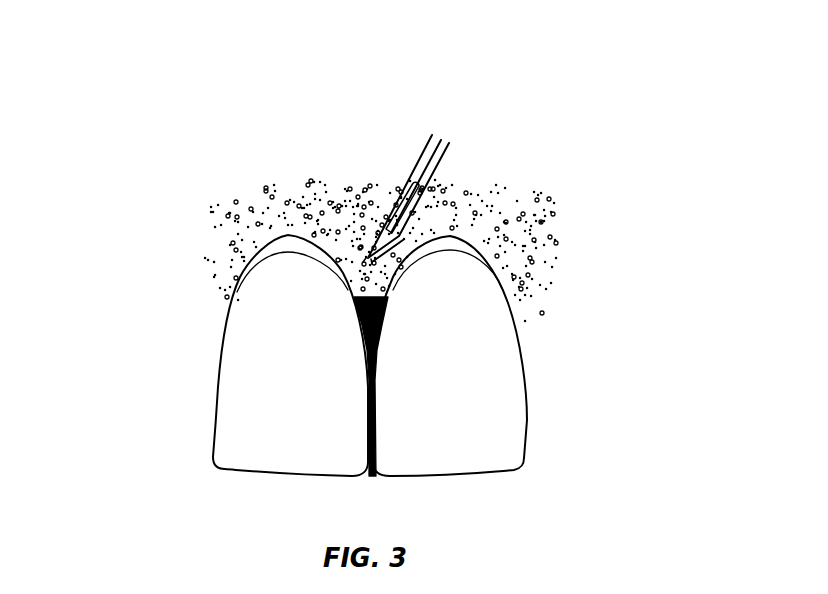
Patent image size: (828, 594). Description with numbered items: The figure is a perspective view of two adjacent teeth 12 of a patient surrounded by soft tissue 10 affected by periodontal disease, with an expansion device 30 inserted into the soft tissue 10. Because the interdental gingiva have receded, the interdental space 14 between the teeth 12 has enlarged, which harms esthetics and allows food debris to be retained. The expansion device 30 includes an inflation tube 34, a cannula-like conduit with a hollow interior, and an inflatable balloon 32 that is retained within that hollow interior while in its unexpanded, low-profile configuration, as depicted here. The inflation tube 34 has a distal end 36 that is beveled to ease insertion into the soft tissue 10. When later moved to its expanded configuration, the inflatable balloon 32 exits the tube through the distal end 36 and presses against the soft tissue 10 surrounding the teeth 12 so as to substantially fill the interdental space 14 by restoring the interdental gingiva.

The soft tissue 10 is at (302, 218).
The adjacent teeth 12 is at (260, 437).
The interdental space 14 is at (384, 311).
The expansion device 30 is at (443, 179).
The inflatable balloon 32 is at (398, 204).
The inflation tube 34 is at (418, 148).
The distal end 36 is at (365, 257).